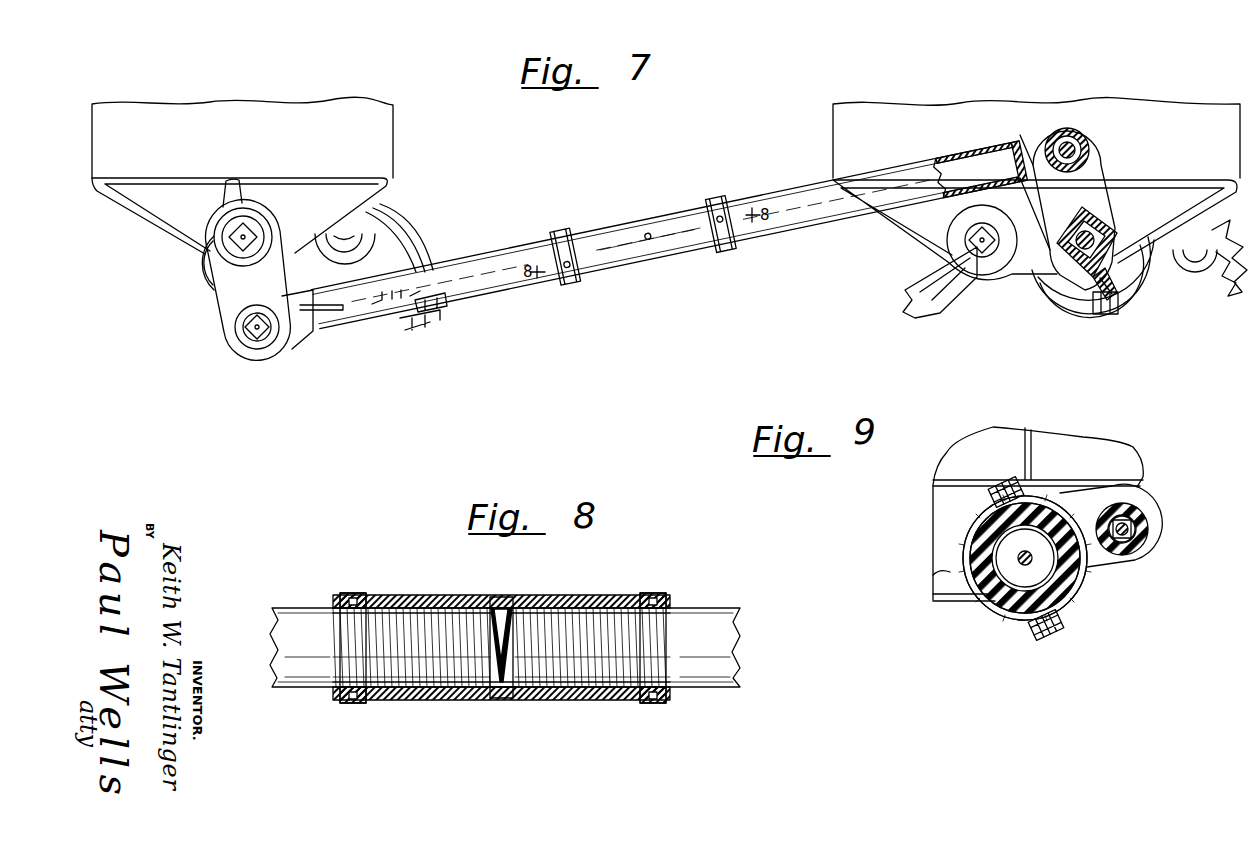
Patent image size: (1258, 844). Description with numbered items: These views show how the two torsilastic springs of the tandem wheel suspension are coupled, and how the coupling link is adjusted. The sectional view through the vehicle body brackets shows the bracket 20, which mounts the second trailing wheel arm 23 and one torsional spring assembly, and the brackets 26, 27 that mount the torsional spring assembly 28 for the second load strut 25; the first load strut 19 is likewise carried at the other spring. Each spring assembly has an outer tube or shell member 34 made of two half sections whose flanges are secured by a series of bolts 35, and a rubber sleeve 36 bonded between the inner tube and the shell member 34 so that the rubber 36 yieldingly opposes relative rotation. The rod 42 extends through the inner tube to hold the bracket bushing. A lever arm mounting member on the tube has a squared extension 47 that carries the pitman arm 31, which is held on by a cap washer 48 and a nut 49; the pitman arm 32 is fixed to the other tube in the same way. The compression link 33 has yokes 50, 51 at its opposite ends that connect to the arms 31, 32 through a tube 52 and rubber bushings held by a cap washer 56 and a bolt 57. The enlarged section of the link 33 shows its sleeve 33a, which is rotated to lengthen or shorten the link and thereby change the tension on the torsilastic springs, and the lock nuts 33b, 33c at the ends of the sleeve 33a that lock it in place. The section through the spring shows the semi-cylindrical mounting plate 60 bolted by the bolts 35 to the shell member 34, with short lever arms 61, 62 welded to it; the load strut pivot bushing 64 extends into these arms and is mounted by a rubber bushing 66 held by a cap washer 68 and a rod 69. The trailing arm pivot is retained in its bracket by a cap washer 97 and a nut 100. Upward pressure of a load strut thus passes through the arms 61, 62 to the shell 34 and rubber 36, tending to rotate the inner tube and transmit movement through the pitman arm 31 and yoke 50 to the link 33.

In FIG. 7, the load strut 19 is at (1233, 276).
In FIG. 7, the bracket 20 is at (1170, 115).
In FIG. 7, the second trailing wheel arm 23 is at (935, 290).
In FIG. 7, the second load strut 25 is at (420, 332).
In FIG. 9, the bracket 26 is at (1120, 462).
In FIG. 7, the bracket 27 is at (373, 132).
In FIG. 7, the torsional spring assembly 28 is at (193, 282).
In FIG. 7, the lever arm (pitman arm) 31 is at (1110, 278).
In FIG. 7, the lever arm (pitman arm) 32 is at (233, 195).
In FIG. 7, the compression link 33 is at (445, 282).
In FIG. 8, the compression link 33 is at (725, 652).
In FIG. 7, the sleeve 33a is at (631, 225).
In FIG. 8, the sleeve 33a is at (515, 700).
In FIG. 7, the lock nut 33b is at (570, 232).
In FIG. 8, the lock nut 33b is at (342, 700).
In FIG. 7, the lock nut 33c is at (726, 202).
In FIG. 8, the lock nut 33c is at (650, 700).
In FIG. 7, the outer tube (shell member) 34 is at (182, 267).
In FIG. 9, the outer tube (shell member) 34 is at (933, 573).
In FIG. 9, the bolts 35 is at (990, 494).
In FIG. 7, the rubber sleeve 36 is at (208, 273).
In FIG. 9, the rubber sleeve 36 is at (1000, 600).
In FIG. 7, the rod 42 is at (1103, 270).
In FIG. 7, the squared extension 47 is at (1095, 225).
In FIG. 7, the cap washer 48 is at (268, 242).
In FIG. 7, the nut 49 is at (232, 237).
In FIG. 7, the yoke 50 is at (1025, 143).
In FIG. 7, the yoke 51 is at (306, 338).
In FIG. 7, the tube 52 is at (1068, 137).
In FIG. 7, the cap washer 56 is at (264, 348).
In FIG. 7, the bolt 57 is at (254, 334).
In FIG. 7, the semi-cylindrical mounting plate 60 is at (1142, 272).
In FIG. 9, the semi-cylindrical mounting plate 60 is at (1066, 608).
In FIG. 9, the short lever arm 61 is at (1152, 560).
In FIG. 7, the short lever arm 62 is at (327, 253).
In FIG. 9, the pivot bushing 64 is at (1142, 529).
In FIG. 9, the rubber bushing 66 is at (1148, 512).
In FIG. 7, the cap washer 68 is at (300, 245).
In FIG. 9, the rod 69 is at (1127, 523).
In FIG. 7, the cap washer 97 is at (1000, 258).
In FIG. 7, the nut 100 is at (985, 254).